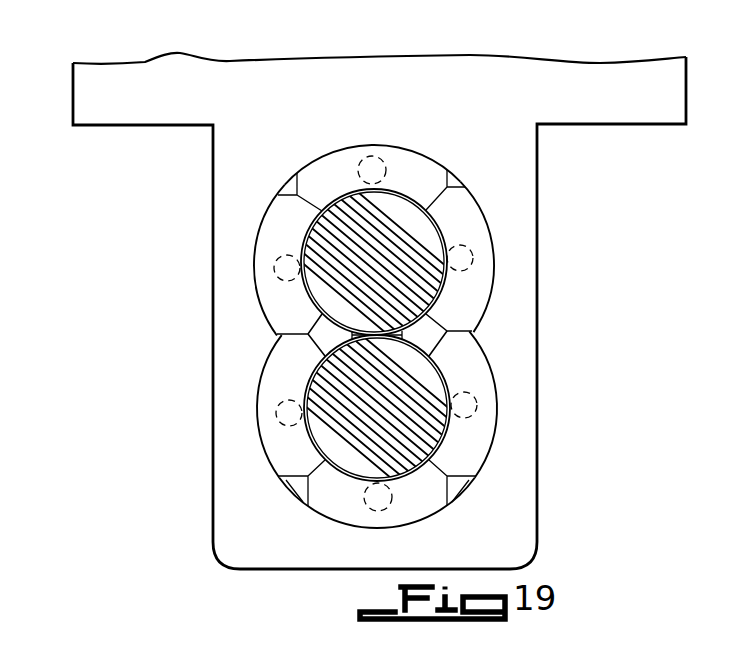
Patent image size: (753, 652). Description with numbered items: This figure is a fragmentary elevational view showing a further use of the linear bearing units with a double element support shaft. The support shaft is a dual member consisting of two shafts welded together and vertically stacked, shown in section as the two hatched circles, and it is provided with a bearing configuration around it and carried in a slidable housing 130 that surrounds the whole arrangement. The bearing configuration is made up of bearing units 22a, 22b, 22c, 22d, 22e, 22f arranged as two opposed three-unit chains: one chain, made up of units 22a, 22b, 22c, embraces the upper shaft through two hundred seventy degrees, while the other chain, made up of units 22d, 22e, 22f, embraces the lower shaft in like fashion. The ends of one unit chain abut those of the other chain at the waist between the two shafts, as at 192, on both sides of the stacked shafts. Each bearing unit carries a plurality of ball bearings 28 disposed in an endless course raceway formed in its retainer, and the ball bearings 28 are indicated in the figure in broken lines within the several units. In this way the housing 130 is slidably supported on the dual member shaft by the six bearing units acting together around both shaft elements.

The slidable housing 130 is at (530, 203).
The abutment of unit chains 192 is at (279, 334).
The bearing unit 22a is at (480, 239).
The bearing unit 22b is at (437, 187).
The bearing unit 22c is at (303, 239).
The bearing unit 22d is at (305, 376).
The bearing unit 22e is at (355, 505).
The bearing unit 22f is at (484, 449).
The ball bearings 28 is at (380, 158).